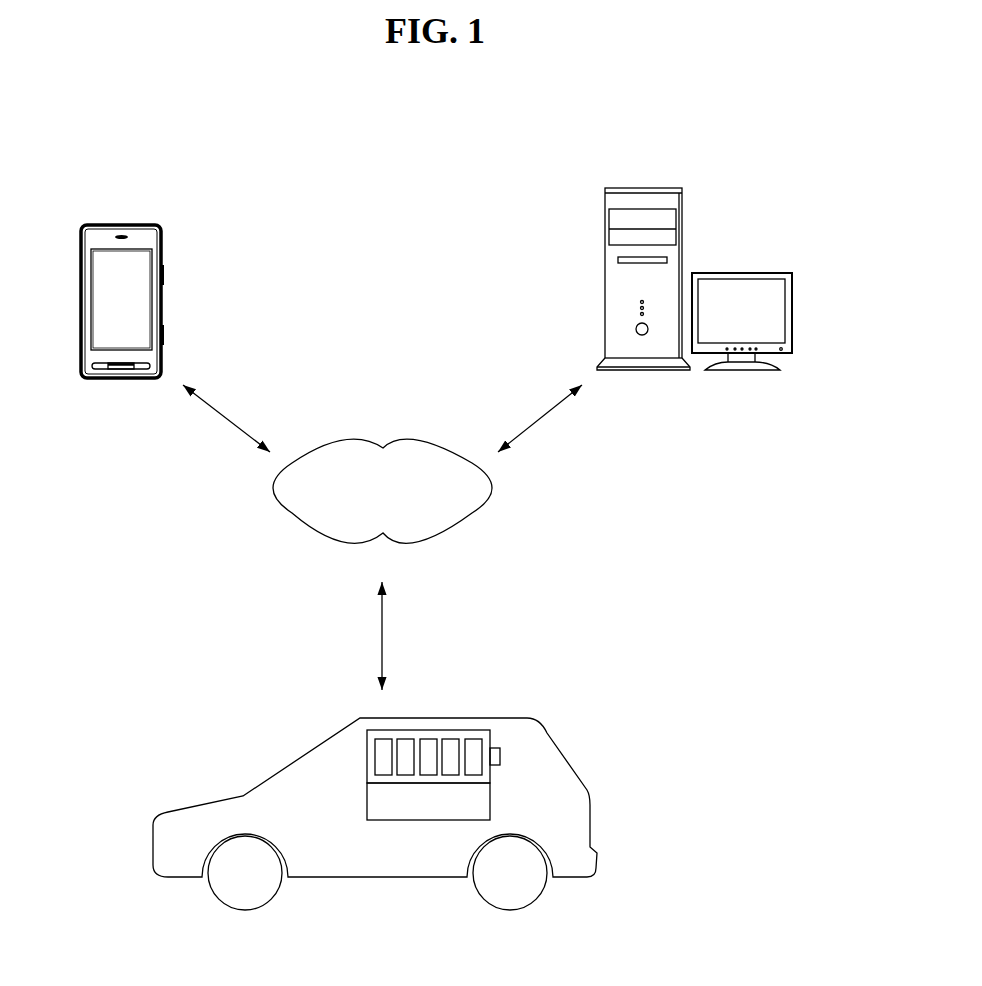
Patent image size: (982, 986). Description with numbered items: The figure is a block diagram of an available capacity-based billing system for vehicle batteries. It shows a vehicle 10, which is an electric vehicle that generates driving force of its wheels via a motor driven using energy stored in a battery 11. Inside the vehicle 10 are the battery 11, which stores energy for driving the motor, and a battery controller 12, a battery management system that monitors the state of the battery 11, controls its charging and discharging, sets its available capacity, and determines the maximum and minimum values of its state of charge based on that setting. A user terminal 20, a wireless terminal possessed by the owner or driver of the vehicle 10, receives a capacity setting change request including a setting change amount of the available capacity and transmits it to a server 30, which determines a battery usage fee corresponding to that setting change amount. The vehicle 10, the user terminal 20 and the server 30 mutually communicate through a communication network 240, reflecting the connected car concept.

The vehicle 10 is at (548, 745).
The battery 11 is at (447, 735).
The battery controller 12 is at (485, 802).
The user terminal 20 is at (121, 223).
The server 30 is at (750, 273).
The communication network 240 is at (348, 445).